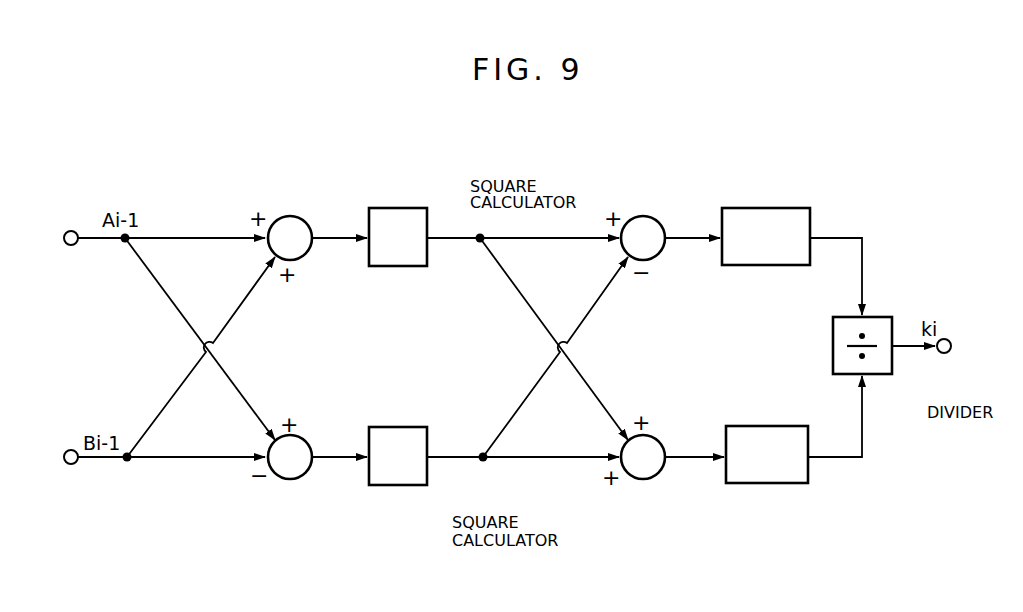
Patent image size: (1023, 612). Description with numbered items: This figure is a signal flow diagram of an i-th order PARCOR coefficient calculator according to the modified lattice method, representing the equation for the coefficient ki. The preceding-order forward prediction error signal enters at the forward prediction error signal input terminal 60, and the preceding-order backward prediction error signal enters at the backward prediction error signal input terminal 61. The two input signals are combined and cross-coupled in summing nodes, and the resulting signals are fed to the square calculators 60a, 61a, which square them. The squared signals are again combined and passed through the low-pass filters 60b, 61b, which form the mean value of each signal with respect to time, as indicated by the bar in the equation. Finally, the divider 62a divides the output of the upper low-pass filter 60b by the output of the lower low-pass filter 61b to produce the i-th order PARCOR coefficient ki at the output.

The forward prediction error signal input terminal 60 is at (71, 231).
The backward prediction error signal input terminal 61 is at (71, 464).
The square calculator 60a is at (395, 207).
The square calculator 61a is at (400, 486).
The low-pass filter 60b is at (763, 207).
The low-pass filter 61b is at (763, 484).
The divider 62a is at (880, 375).